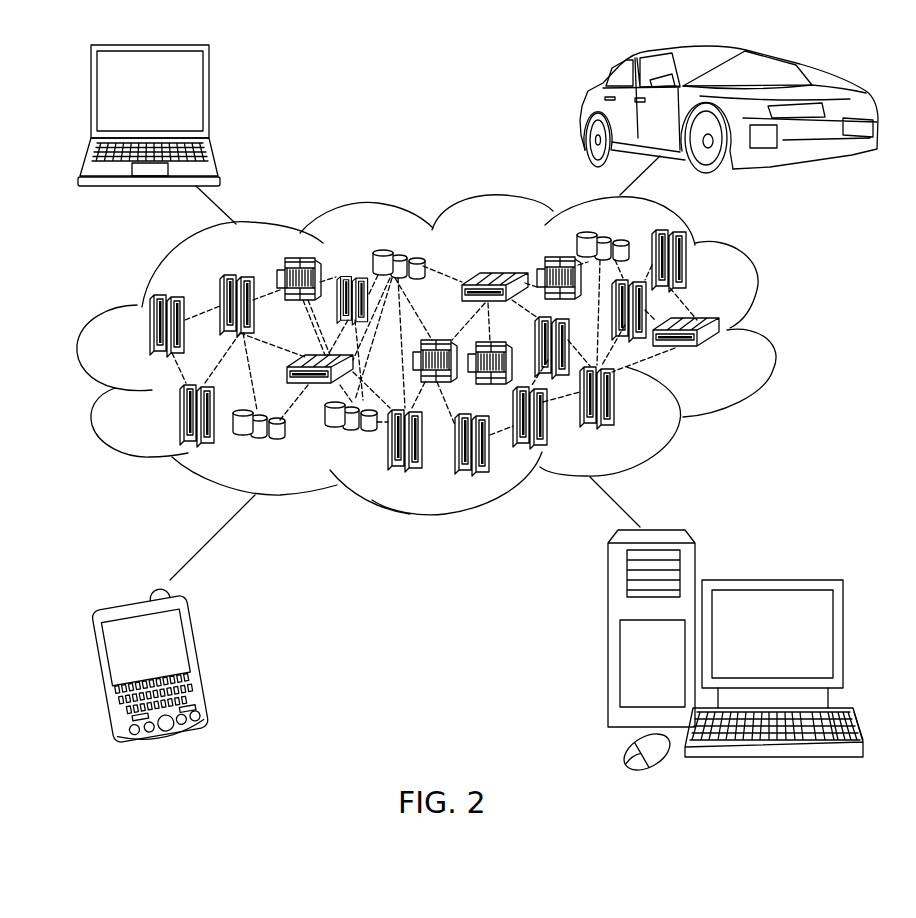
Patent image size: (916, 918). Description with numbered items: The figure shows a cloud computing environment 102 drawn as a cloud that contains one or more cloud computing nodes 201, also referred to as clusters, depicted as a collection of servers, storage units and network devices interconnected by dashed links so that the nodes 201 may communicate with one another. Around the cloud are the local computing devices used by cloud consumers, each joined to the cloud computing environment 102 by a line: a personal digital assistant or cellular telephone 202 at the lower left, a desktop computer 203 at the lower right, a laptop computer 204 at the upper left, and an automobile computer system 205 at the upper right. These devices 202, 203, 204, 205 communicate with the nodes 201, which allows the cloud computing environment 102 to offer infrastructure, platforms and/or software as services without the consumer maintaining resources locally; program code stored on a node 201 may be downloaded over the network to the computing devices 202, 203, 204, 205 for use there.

The cloud computing environment 102 is at (773, 334).
The cloud computing nodes 201 is at (731, 361).
The personal digital assistant (PDA) or cellular telephone 202 is at (202, 660).
The desktop computer 203 is at (768, 579).
The laptop computer 204 is at (209, 101).
The automobile computer system 205 is at (582, 112).